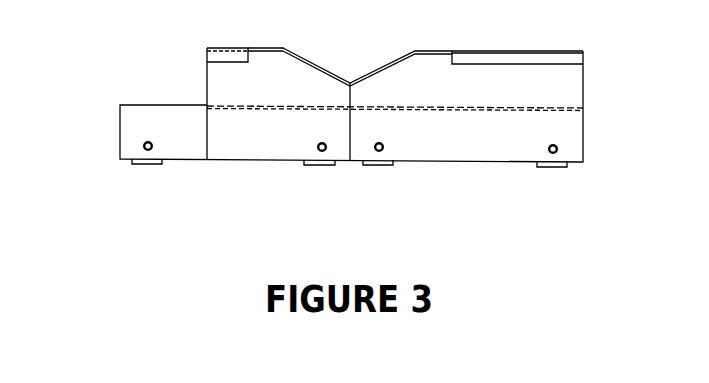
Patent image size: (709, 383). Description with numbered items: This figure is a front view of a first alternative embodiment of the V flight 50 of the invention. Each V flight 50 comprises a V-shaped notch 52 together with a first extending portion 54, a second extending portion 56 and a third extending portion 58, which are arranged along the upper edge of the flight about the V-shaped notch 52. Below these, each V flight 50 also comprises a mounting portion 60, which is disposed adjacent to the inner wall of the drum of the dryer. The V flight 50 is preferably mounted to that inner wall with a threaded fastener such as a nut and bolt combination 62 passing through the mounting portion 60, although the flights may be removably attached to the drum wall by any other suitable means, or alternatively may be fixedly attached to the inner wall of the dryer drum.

The V flight 50 is at (510, 172).
The V-shaped notch 52 is at (353, 63).
The first extending portion 54 is at (584, 80).
The second extending portion 56 is at (265, 48).
The third extending portion 58 is at (210, 52).
The mounting portion 60 is at (584, 134).
The nut and bolt combination 62 is at (153, 148).